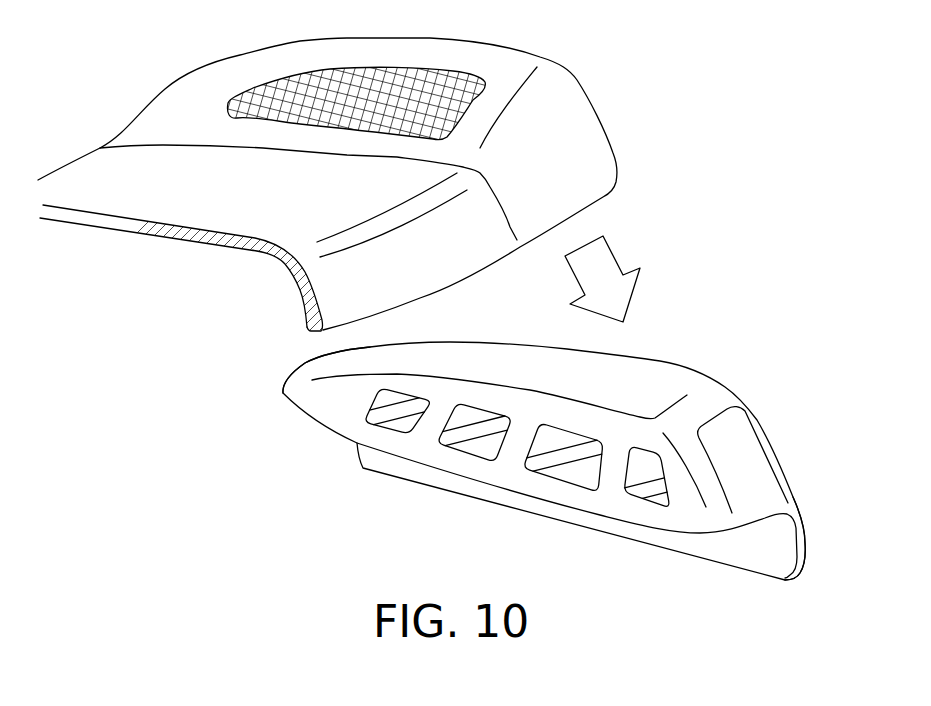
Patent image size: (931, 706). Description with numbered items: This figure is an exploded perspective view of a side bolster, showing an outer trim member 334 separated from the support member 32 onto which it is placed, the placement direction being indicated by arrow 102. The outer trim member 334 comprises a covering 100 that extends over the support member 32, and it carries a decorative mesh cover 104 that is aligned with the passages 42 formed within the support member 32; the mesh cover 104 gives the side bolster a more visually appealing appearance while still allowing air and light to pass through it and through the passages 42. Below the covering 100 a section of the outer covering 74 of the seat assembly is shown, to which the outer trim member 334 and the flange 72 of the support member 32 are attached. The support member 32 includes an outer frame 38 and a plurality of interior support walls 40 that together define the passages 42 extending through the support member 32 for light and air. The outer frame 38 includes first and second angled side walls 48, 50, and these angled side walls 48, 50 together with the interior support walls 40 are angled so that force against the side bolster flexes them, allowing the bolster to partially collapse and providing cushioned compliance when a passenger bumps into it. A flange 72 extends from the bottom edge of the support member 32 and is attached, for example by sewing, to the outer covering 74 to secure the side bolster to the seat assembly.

The covering 100 is at (600, 112).
The outer trim member 334 is at (478, 60).
The decorative mesh cover 104 is at (308, 90).
The outer covering 74 is at (217, 218).
The arrow 102 is at (613, 252).
The support member 32 is at (740, 393).
The outer frame 38 is at (628, 383).
The second angled side wall 50 is at (328, 380).
The interior support wall 40 is at (459, 418).
The passage 42 is at (411, 420).
The first angled side wall 48 is at (743, 467).
The flange 72 is at (805, 548).